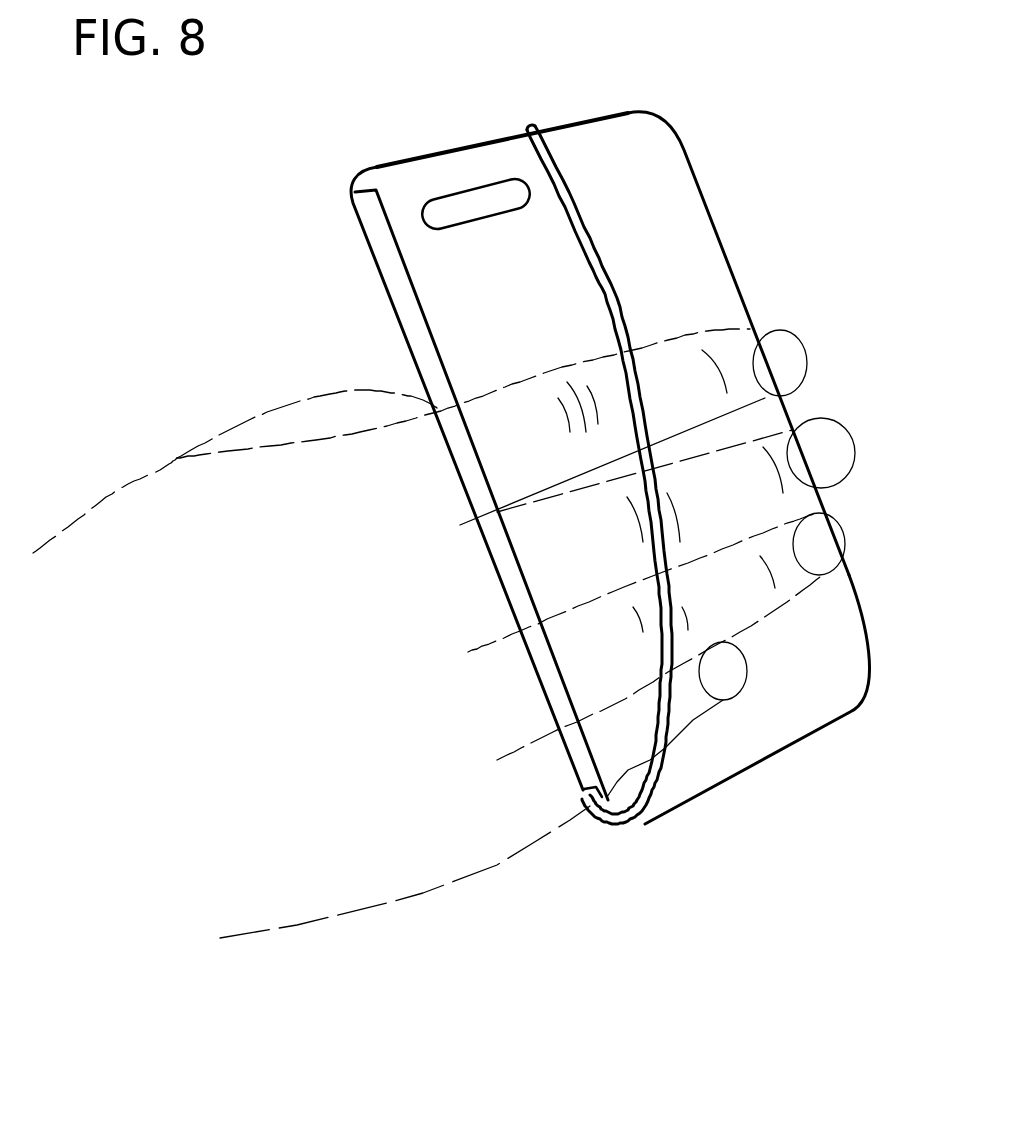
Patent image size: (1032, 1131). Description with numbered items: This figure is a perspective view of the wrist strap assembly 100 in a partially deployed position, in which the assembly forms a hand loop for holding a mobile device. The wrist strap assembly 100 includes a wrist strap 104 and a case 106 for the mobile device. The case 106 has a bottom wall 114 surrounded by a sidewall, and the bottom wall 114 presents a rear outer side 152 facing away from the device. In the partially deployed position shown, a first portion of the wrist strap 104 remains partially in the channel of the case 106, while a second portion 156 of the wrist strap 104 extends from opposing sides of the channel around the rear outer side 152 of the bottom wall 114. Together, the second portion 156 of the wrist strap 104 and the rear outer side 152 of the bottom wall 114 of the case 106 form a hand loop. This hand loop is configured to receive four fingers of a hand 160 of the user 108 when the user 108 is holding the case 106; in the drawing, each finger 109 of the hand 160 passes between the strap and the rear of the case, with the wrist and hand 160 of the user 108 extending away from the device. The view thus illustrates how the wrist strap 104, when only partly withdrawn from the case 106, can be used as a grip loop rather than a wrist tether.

The wrist strap assembly 100 is at (452, 62).
The wrist strap 104 is at (549, 156).
The case 106 is at (428, 157).
The user 108 is at (175, 460).
The finger 109 is at (793, 344).
The bottom wall 114 is at (813, 627).
The rear outer side 152 is at (654, 206).
The second portion 156 is at (572, 190).
The hand 160 is at (127, 482).